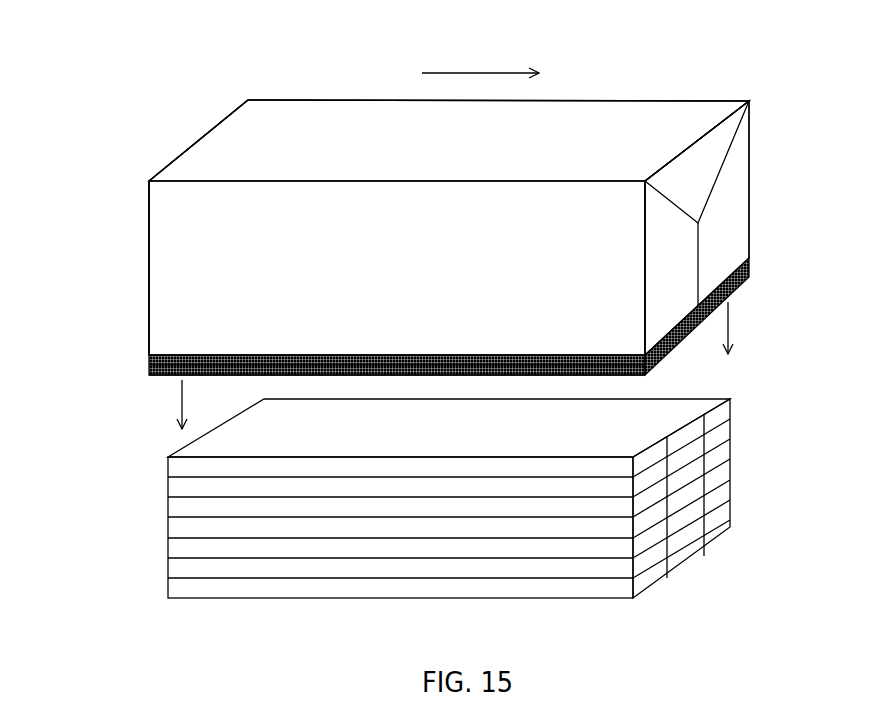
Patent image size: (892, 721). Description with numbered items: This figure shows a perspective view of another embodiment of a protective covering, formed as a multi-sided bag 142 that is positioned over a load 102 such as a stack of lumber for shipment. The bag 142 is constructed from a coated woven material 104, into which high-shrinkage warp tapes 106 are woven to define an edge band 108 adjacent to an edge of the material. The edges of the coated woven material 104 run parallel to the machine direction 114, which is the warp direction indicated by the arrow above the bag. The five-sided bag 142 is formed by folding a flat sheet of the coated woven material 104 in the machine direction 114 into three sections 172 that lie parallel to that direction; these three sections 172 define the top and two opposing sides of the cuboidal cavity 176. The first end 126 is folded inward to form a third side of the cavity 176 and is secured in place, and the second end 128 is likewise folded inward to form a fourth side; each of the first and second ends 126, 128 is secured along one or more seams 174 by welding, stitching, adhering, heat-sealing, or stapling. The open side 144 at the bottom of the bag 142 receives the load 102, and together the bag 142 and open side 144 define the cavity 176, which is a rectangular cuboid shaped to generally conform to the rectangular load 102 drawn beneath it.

The load 102 is at (718, 535).
The coated woven material 104 is at (578, 116).
The high-shrinkage warp tapes 106 is at (275, 367).
The edge band 108 is at (518, 358).
The machine direction 114 is at (462, 73).
The first end 126 is at (147, 258).
The second end 128 is at (730, 247).
The multi-sided bag 142 is at (700, 101).
The open side 144 is at (698, 340).
The sections 172 is at (270, 133).
The seams 174 is at (722, 170).
The cavity 176 is at (400, 379).